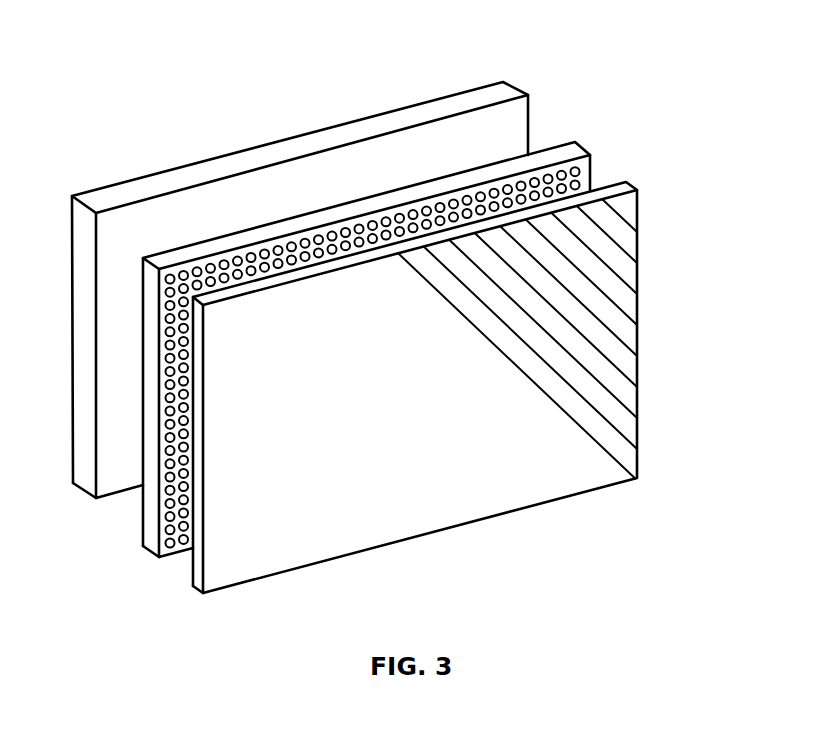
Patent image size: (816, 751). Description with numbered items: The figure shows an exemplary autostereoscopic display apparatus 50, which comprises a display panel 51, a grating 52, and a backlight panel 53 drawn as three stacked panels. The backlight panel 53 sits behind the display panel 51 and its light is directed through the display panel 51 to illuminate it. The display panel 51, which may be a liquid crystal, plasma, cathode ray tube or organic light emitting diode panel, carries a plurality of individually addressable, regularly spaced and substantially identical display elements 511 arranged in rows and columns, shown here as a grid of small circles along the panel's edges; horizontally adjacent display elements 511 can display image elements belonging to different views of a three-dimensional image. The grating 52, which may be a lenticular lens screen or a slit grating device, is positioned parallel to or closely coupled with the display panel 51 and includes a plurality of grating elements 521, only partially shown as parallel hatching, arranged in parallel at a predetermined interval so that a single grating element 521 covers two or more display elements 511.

The autostereoscopic display apparatus 50 is at (351, 30).
The display panel 51 is at (558, 157).
The display elements 511 is at (578, 170).
The grating 52 is at (637, 267).
The grating elements 521 is at (580, 367).
The backlight panel 53 is at (442, 110).